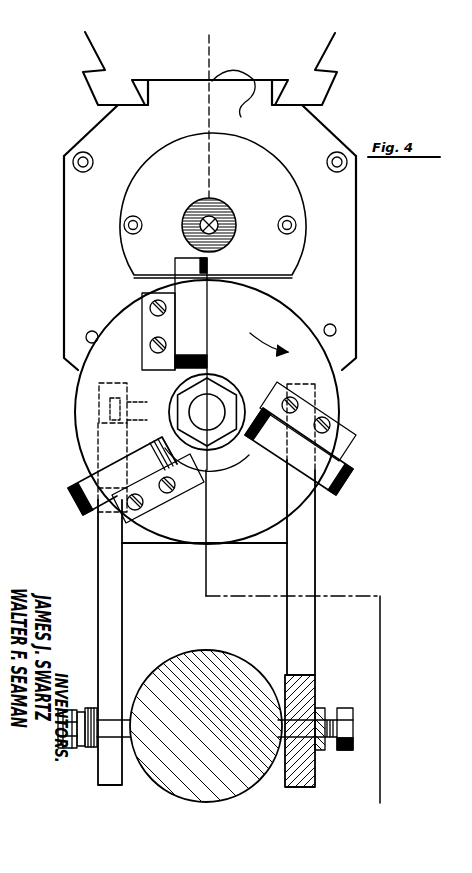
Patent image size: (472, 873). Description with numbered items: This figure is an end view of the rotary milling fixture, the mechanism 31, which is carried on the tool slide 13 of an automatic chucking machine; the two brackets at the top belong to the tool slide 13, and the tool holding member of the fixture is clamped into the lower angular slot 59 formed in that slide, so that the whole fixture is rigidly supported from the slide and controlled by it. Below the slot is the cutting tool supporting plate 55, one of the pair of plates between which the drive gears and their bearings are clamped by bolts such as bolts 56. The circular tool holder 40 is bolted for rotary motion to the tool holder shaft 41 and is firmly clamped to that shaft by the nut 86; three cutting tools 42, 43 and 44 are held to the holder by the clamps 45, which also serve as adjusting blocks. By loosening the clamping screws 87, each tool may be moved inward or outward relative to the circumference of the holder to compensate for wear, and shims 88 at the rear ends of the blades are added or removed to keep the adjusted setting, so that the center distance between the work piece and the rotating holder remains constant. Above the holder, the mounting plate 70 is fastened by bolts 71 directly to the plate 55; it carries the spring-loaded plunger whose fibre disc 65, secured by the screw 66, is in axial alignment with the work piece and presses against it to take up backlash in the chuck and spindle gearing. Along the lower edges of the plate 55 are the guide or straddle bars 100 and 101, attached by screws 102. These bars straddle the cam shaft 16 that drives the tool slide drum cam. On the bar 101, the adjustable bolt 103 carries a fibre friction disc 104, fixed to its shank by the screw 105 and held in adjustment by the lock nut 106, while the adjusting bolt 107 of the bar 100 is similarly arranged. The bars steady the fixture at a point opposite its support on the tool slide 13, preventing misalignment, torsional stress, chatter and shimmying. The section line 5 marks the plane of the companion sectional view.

The section line 5 is at (170, 53).
The tool slide 13 is at (107, 42).
The shaft 16 is at (185, 677).
The mechanism 31 is at (352, 378).
The circular tool holder 40 is at (265, 495).
The tool holder shaft 41 is at (227, 383).
The cutting tool 42 is at (188, 285).
The cutting tool 43 is at (75, 490).
The cutting tool 44 is at (340, 462).
The clamps 45 is at (155, 498).
The plate 55 is at (120, 140).
The bolts 56 is at (338, 328).
The lower angular slot 59 is at (235, 98).
The fibre disc 65 is at (238, 218).
The screw 66 is at (213, 206).
The mounting plate 70 is at (167, 168).
The bolts 71 is at (127, 217).
The nut 86 is at (190, 408).
The clamping screws 87 is at (163, 340).
The shims 88 is at (190, 356).
The guide bar 100 is at (105, 586).
The guide bar 101 is at (302, 571).
The screws 102 is at (99, 408).
The adjustable bolt 103 is at (347, 712).
The friction disc 104 is at (310, 681).
The screw 105 is at (318, 712).
The lock nut 106 is at (324, 751).
The adjusting bolt 107 is at (75, 710).